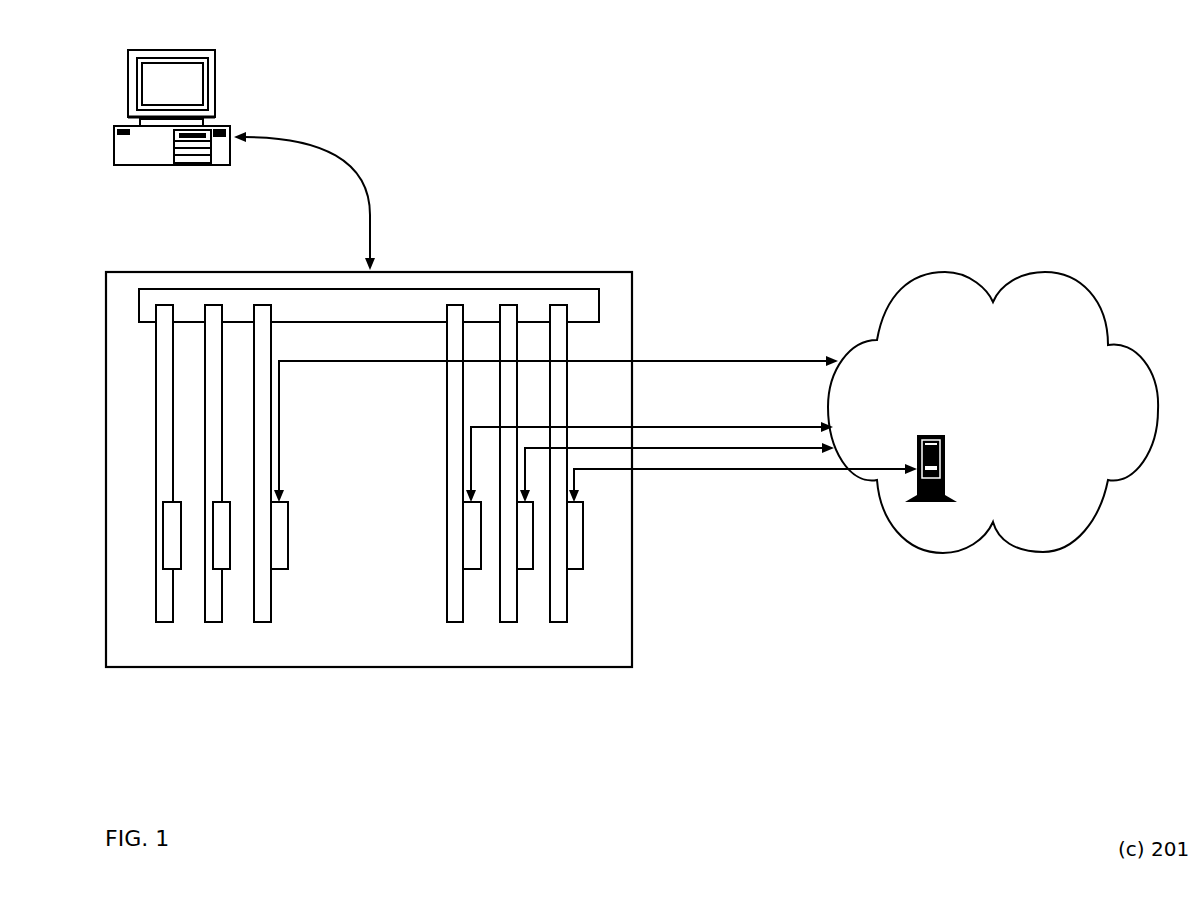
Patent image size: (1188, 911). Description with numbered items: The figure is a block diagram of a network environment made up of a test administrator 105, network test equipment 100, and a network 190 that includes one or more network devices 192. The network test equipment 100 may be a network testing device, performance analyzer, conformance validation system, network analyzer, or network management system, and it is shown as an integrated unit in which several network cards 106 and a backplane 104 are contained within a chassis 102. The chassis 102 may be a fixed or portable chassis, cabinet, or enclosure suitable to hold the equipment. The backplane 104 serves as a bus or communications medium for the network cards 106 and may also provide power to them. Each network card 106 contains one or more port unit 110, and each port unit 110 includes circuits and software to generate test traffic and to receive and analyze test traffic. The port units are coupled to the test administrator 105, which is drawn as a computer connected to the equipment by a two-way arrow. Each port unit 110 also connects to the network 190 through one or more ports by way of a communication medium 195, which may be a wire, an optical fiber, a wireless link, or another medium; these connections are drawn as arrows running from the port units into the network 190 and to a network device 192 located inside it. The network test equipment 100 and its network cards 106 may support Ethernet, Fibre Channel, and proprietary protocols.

The network test equipment 100 is at (450, 398).
The chassis 102 is at (483, 272).
The backplane 104 is at (550, 289).
The test administrator 105 is at (172, 134).
The network cards 106 is at (466, 543).
The port unit 110 is at (567, 567).
The network 190 is at (993, 412).
The network device 192 is at (945, 469).
The communication medium 195 is at (697, 469).